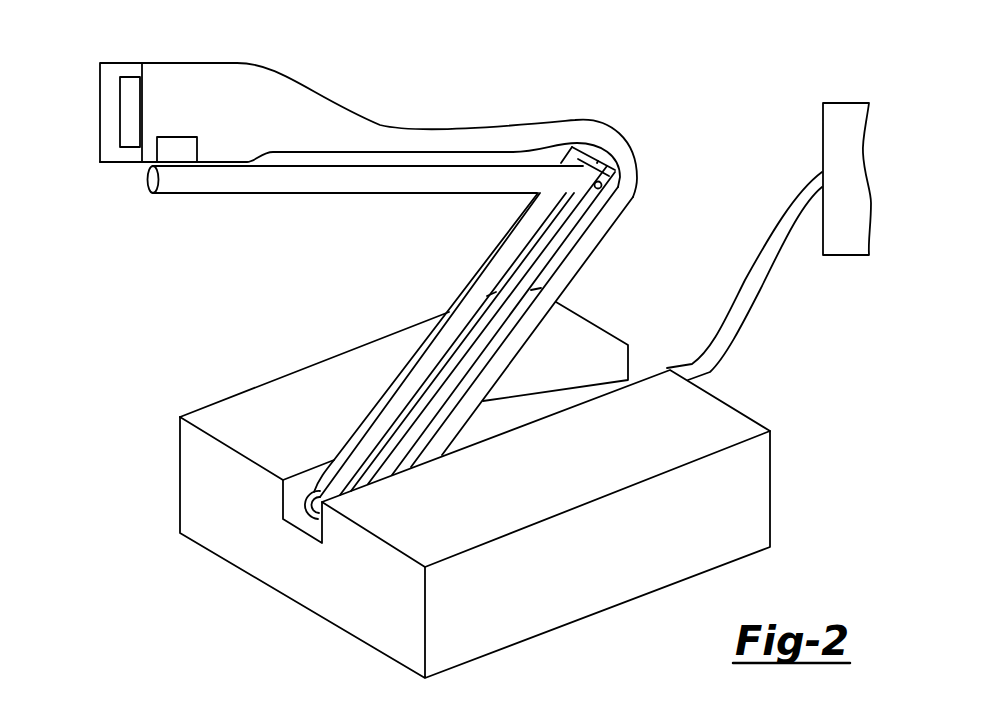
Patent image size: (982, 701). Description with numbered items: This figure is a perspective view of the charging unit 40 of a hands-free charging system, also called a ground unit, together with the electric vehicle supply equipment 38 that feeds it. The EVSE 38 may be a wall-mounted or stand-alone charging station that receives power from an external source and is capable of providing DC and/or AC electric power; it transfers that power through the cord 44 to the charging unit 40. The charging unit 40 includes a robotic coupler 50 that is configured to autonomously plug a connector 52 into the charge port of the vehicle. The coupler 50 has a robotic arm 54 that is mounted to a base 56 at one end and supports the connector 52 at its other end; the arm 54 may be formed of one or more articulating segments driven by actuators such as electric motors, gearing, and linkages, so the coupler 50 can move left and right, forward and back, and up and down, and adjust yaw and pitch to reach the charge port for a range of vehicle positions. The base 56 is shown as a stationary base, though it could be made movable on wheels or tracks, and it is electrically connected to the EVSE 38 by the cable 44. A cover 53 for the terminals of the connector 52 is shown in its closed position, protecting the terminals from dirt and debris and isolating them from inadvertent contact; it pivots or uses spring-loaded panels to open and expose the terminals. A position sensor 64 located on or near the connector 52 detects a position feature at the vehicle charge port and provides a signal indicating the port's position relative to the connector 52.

The electric vehicle supply equipment (EVSE) 38 is at (855, 145).
The charging unit 40 is at (655, 85).
The cord 44 is at (775, 213).
The robotic coupler 50 is at (312, 74).
The connector 52 is at (132, 88).
The cover 53 is at (108, 133).
The robotic arm 54 is at (327, 180).
The base 56 is at (242, 540).
The position sensor 64 is at (181, 128).